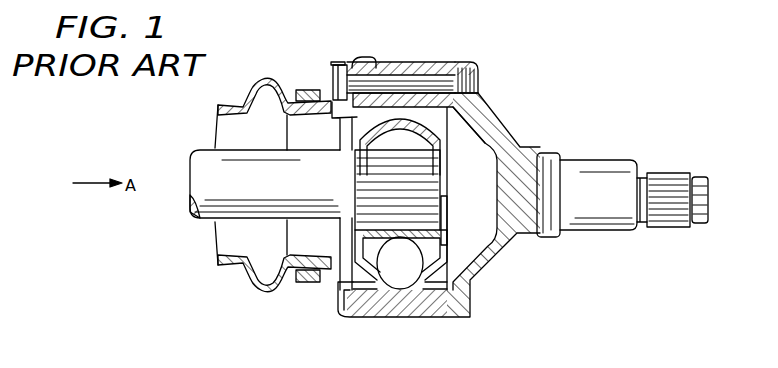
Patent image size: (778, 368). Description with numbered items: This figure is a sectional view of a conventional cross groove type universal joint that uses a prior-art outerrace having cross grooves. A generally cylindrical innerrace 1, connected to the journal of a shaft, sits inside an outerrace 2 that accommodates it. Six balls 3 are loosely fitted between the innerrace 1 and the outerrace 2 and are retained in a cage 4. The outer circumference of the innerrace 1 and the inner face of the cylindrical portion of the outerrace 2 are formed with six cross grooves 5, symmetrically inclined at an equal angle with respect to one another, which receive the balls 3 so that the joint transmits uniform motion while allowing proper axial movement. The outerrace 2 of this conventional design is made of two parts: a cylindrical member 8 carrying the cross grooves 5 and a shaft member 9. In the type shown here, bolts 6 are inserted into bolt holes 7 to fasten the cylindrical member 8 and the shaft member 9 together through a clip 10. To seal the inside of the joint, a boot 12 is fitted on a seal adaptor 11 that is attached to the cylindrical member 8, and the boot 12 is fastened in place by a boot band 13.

The innerrace 1 is at (430, 246).
The outerrace 2 is at (472, 316).
The balls 3 is at (402, 292).
The cage 4 is at (452, 116).
The cross grooves 5 is at (373, 292).
The bolts 6 is at (339, 62).
The bolt holes 7 is at (464, 62).
The cylindrical member 8 is at (429, 62).
The shaft member 9 is at (493, 114).
The clip 10 is at (446, 222).
The seal adaptor 11 is at (333, 73).
The boot 12 is at (258, 292).
The boot band 13 is at (308, 284).